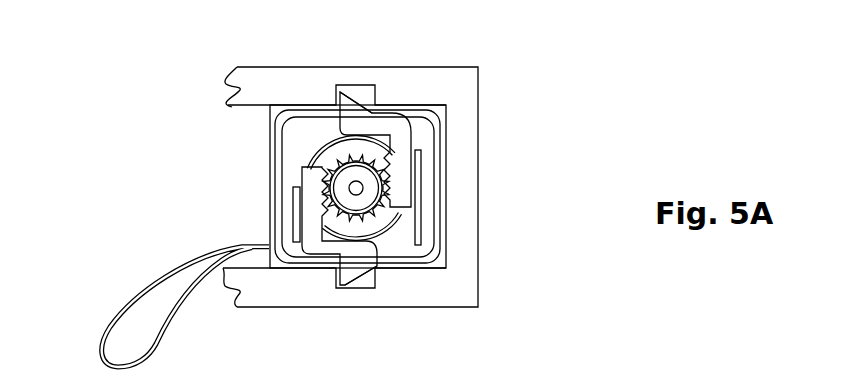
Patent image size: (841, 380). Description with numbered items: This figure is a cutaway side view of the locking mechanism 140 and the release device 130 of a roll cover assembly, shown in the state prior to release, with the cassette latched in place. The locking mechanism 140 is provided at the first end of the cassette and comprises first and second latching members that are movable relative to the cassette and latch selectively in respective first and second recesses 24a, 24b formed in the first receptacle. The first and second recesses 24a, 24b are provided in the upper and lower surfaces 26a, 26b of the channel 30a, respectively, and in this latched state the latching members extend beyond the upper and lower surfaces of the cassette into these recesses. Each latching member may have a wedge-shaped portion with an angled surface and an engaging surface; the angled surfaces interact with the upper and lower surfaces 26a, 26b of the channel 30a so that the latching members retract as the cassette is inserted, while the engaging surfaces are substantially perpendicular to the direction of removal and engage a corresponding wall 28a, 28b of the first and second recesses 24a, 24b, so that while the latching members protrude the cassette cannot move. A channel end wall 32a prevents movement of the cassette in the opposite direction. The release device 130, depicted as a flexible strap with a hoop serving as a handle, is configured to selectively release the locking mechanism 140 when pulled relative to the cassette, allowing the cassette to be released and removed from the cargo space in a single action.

The release device 130 is at (110, 305).
The locking mechanism 140 is at (302, 151).
The first recess 24a is at (353, 95).
The second recess 24b is at (357, 287).
The upper surface of the channel 26a is at (232, 107).
The lower surface of the channel 26b is at (247, 268).
The wall of the first recess 28a is at (337, 93).
The wall of the second recess 28b is at (335, 285).
The channel 30a is at (262, 171).
The channel end wall 32a is at (448, 200).